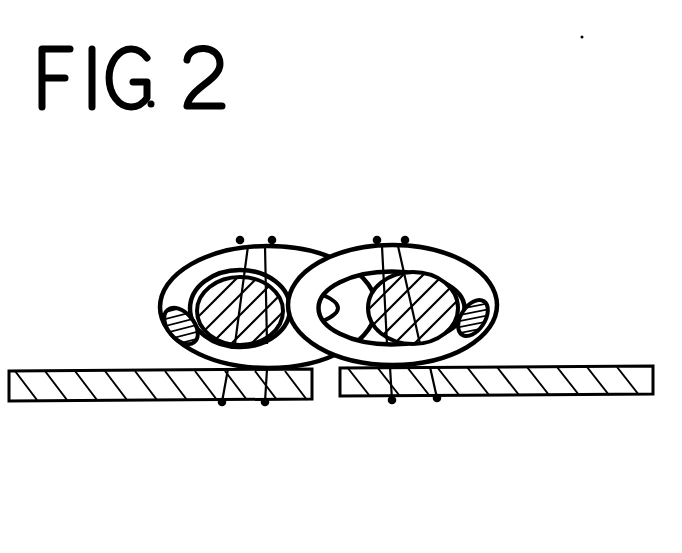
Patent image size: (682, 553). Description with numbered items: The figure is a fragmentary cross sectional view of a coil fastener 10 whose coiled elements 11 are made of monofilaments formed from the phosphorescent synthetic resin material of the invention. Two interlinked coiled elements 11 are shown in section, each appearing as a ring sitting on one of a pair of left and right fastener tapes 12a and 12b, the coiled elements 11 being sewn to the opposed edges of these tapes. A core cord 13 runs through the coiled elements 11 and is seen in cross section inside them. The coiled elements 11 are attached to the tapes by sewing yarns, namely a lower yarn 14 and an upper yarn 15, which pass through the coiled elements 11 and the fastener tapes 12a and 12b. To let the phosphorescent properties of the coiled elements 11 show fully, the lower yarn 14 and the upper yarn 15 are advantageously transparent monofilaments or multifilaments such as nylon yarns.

The coil fastener 10 is at (449, 244).
The coiled elements 11 is at (497, 316).
The core cord 13 is at (466, 283).
The lower yarn 14 is at (241, 242).
The upper yarn 15 is at (437, 400).
The left fastener tape 12a is at (108, 405).
The right fastener tape 12b is at (595, 396).